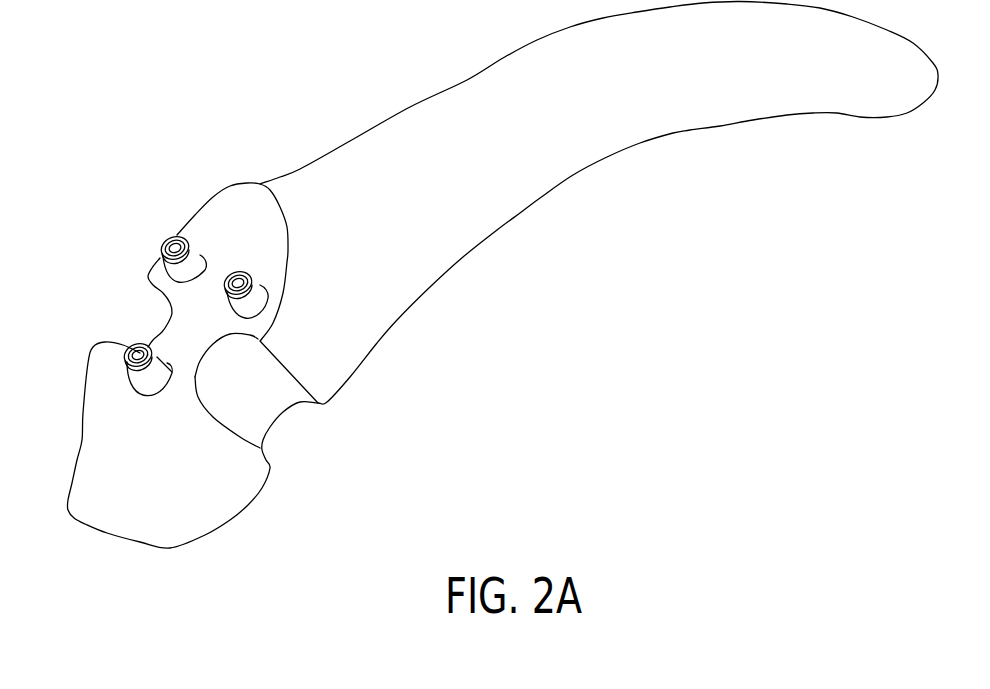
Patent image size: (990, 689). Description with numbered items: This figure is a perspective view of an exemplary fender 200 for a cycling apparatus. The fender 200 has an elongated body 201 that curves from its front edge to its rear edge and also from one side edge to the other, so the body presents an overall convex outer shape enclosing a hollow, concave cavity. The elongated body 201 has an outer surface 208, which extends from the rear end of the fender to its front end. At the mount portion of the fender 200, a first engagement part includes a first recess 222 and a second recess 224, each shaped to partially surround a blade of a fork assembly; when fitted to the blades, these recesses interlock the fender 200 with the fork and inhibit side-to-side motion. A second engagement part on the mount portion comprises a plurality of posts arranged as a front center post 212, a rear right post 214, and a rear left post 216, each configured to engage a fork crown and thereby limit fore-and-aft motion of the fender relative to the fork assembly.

The fender 200 is at (235, 117).
The elongated body 201 is at (362, 133).
The outer surface 208 is at (453, 107).
The front center post 212 is at (133, 346).
The rear right post 214 is at (173, 238).
The rear left post 216 is at (250, 277).
The first recess 222 is at (150, 294).
The second recess 224 is at (304, 451).